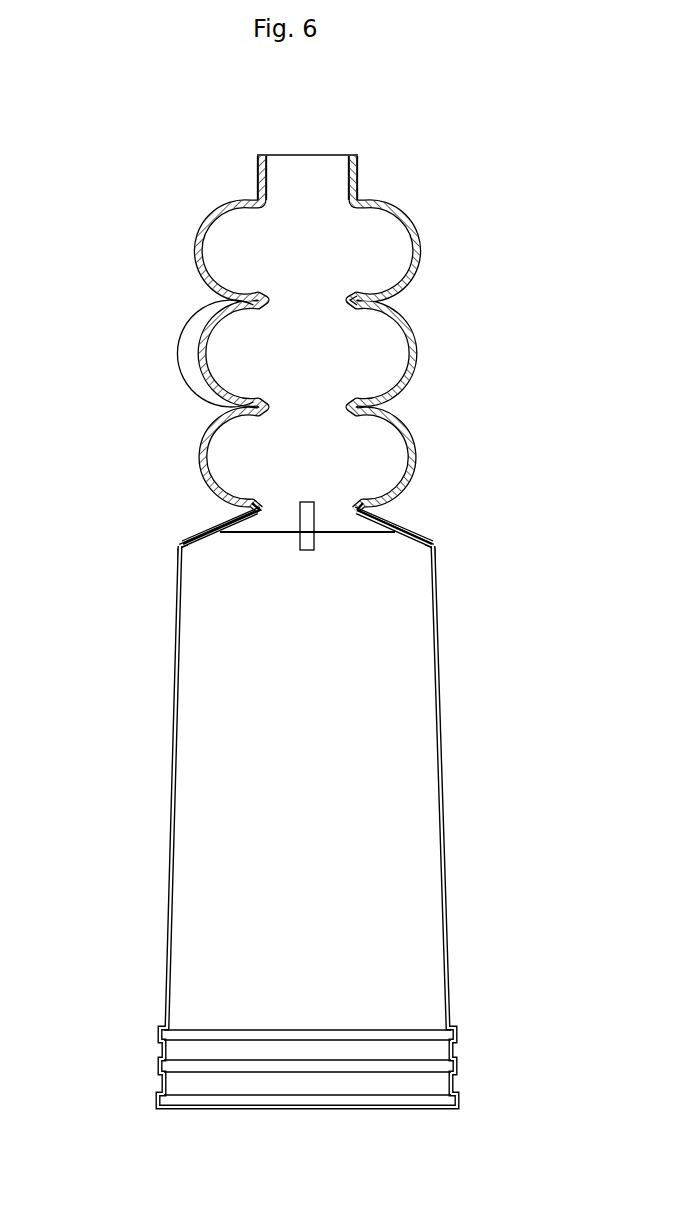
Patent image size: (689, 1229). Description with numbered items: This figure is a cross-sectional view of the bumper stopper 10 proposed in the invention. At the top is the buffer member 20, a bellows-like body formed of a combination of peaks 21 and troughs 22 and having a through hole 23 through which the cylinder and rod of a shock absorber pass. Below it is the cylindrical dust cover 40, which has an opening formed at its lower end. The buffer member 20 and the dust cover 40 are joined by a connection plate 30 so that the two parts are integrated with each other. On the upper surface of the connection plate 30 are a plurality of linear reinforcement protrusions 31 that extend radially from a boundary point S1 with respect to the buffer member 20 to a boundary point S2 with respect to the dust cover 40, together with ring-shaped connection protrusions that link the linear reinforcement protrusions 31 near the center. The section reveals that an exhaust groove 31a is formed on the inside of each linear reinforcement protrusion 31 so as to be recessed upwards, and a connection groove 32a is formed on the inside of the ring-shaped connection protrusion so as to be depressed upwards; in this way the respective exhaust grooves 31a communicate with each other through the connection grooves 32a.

The bumper stopper 10 is at (224, 181).
The buffer member 20 is at (437, 355).
The peak 21 is at (200, 352).
The trough 22 is at (365, 300).
The through hole 23 is at (325, 165).
The connection plate 30 is at (419, 507).
The linear reinforcement protrusion 31 is at (212, 520).
The exhaust groove 31a is at (200, 540).
The connection groove 32a is at (250, 520).
The boundary point with respect to the buffer member S1 is at (215, 518).
The boundary point with respect to the dust cover S2 is at (178, 538).
The dust cover 40 is at (156, 892).